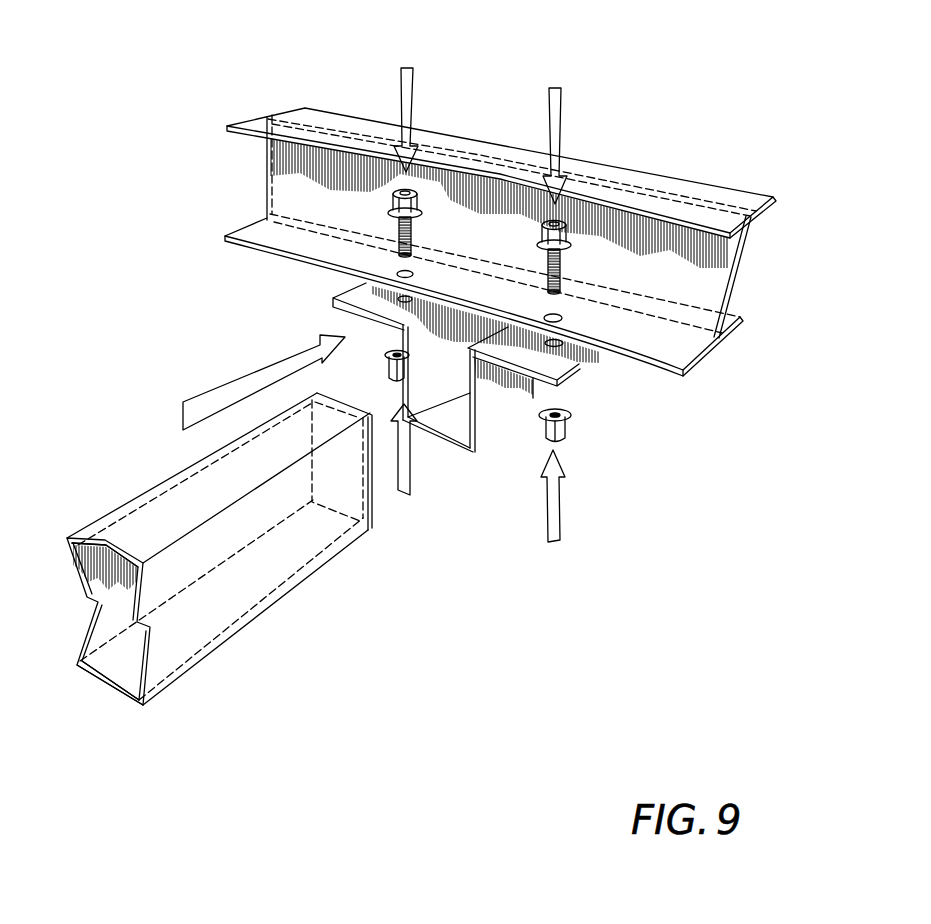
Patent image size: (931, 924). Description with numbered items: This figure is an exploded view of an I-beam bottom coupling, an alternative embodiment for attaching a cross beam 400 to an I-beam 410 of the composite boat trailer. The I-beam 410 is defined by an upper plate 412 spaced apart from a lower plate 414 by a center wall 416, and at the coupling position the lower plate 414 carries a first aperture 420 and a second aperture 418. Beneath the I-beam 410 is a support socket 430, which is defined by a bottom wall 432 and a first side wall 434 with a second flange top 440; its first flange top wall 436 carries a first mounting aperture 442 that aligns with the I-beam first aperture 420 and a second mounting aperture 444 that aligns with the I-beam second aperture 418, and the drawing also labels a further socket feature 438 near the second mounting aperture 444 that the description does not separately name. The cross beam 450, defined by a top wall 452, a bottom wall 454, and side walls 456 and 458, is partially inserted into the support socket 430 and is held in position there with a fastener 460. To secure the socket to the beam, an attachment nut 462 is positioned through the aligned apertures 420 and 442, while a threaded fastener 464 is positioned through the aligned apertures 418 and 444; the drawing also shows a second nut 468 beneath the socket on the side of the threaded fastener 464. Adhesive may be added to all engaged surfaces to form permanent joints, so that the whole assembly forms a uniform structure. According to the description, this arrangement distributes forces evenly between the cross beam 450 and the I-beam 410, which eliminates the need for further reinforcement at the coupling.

The cross beam 400 is at (220, 581).
The I-beam 410 is at (443, 241).
The upper plate 412 is at (602, 181).
The lower plate 414 is at (257, 235).
The center wall 416 is at (298, 195).
The second aperture 418 is at (565, 319).
The first aperture 420 is at (396, 275).
The support socket 430 is at (429, 451).
The bottom wall 432 is at (455, 405).
The first side wall 434 is at (433, 370).
The first flange top wall 436 is at (394, 308).
The second mounting hole 438 is at (538, 385).
The second flange top 440 is at (510, 350).
The first mounting aperture 442 is at (394, 298).
The second mounting aperture 444 is at (562, 347).
The cross beam 450 is at (220, 581).
The top wall 452 is at (238, 472).
The bottom wall 454 is at (128, 656).
The side wall 456 is at (327, 535).
The side wall 458 is at (105, 583).
The fastener 460 is at (410, 205).
The attachment nut 462 is at (392, 347).
The threaded fastener 464 is at (553, 270).
The second nut 468 is at (570, 418).